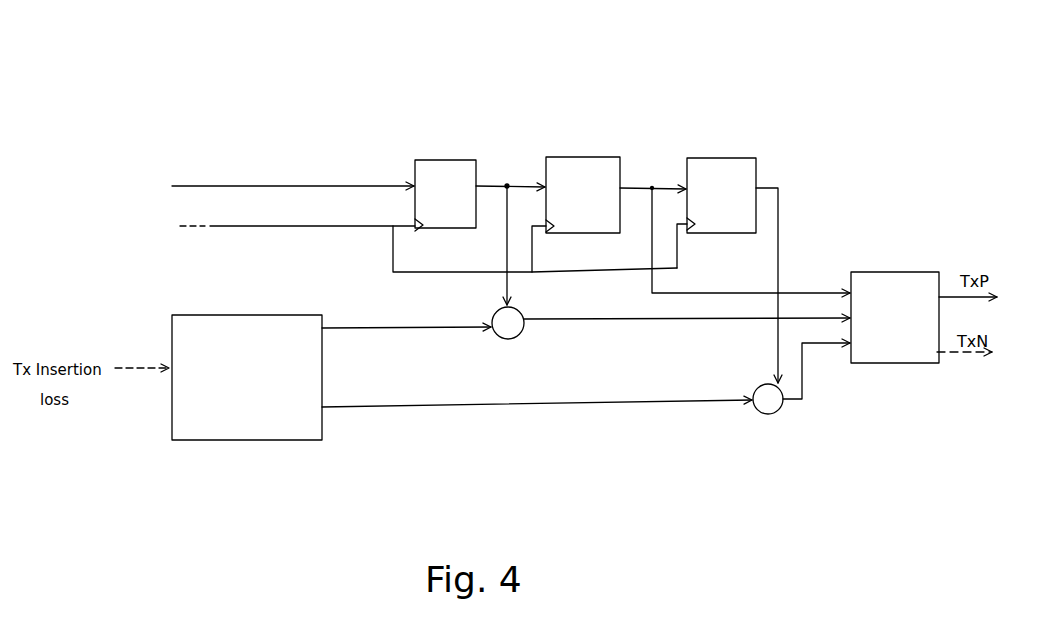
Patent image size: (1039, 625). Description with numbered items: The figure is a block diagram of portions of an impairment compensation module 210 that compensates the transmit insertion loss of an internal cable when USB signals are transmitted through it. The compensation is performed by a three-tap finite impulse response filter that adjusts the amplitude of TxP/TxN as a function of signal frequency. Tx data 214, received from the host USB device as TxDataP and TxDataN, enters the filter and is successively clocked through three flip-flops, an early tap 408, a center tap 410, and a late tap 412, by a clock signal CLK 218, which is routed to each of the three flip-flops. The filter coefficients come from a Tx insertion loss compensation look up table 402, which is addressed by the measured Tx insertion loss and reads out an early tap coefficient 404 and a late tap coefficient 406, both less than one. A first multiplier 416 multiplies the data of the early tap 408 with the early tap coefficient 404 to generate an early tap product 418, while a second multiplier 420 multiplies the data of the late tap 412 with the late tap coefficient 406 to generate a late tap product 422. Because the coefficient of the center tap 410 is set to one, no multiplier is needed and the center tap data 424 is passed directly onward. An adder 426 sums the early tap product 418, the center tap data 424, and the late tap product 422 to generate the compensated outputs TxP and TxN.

The impairment compensation module 210 is at (86, 76).
The Tx data 214 is at (248, 183).
The clock signal CLK 218 is at (398, 247).
The Tx insertion loss compensation look up table 402 is at (198, 313).
The early tap coefficient 404 is at (362, 327).
The late tap coefficient 406 is at (363, 405).
The early tap 408 is at (442, 158).
The center tap 410 is at (578, 157).
The late tap 412 is at (727, 157).
The first multiplier 416 is at (518, 311).
The early tap product 418 is at (611, 306).
The second multiplier 420 is at (763, 385).
The late tap product 422 is at (802, 378).
The center tap data 424 is at (803, 290).
The adder 426 is at (892, 270).